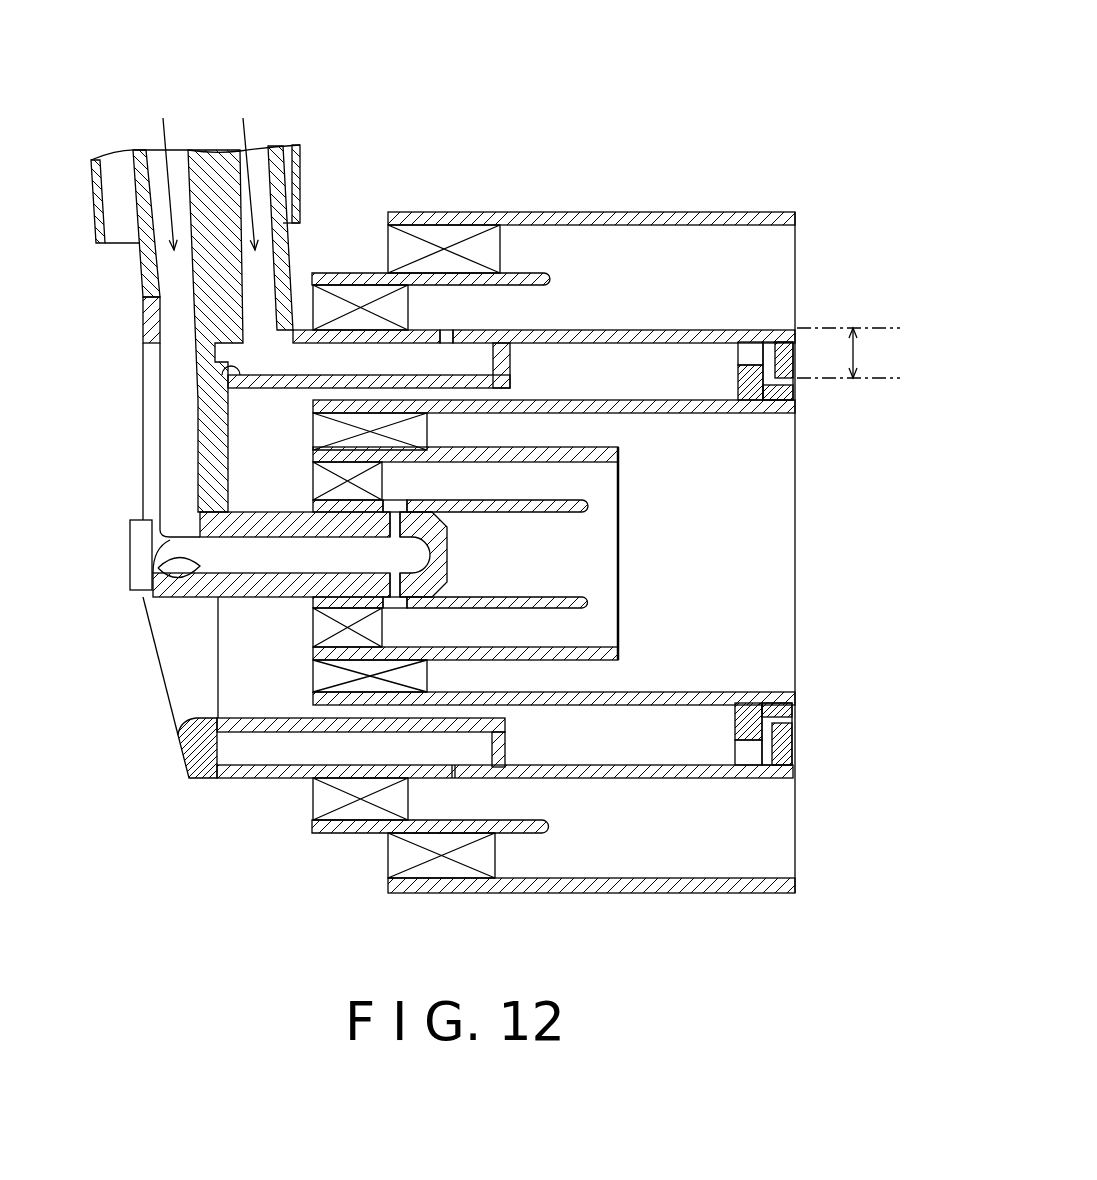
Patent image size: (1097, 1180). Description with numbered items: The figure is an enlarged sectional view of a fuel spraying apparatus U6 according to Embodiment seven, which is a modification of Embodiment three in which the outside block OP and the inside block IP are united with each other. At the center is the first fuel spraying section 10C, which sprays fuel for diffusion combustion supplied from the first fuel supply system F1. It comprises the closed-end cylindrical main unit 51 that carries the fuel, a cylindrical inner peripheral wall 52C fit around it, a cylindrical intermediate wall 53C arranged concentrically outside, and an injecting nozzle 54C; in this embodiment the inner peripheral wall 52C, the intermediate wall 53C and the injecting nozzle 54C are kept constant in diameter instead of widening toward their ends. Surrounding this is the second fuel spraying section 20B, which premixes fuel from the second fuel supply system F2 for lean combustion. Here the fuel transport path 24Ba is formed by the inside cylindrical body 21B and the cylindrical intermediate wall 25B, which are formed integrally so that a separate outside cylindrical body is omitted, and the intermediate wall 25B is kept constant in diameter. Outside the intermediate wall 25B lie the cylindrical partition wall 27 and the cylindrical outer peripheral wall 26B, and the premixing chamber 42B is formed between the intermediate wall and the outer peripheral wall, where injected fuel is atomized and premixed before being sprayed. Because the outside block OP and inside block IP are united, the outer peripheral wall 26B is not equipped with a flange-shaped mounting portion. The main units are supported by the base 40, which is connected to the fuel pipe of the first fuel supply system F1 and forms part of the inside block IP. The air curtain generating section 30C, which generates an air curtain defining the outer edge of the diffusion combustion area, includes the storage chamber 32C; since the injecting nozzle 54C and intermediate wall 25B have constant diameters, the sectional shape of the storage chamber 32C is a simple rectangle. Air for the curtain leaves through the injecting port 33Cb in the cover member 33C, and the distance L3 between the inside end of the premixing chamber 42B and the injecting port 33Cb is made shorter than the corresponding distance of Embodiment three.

The fuel spraying apparatus U6 is at (762, 82).
The first fuel supply system F1 is at (163, 170).
The second fuel supply system F2 is at (245, 170).
The second fuel spraying section 20B is at (808, 213).
The cylindrical outer peripheral wall 26B is at (648, 214).
The cylindrical partition wall 27 is at (537, 273).
The fuel transport path 24Ba is at (327, 333).
The cylindrical intermediate wall 25B is at (572, 326).
The premixing chamber 42B is at (765, 299).
The air curtain generating section 30C is at (808, 340).
The storage chamber 32C is at (672, 386).
The distance L3 is at (848, 353).
The cover member 33C is at (795, 365).
The injecting port 33Cb is at (795, 395).
The injecting nozzle 54C is at (746, 416).
The first fuel spraying section 10C is at (758, 531).
The cylindrical intermediate wall 53C is at (620, 452).
The cylindrical inner peripheral wall 52C is at (590, 507).
The closed-end cylindrical main unit 51 is at (437, 548).
The inside cylindrical body 21B is at (280, 390).
The base 40 is at (152, 645).
The inside block IP is at (157, 768).
The outside block OP is at (840, 868).